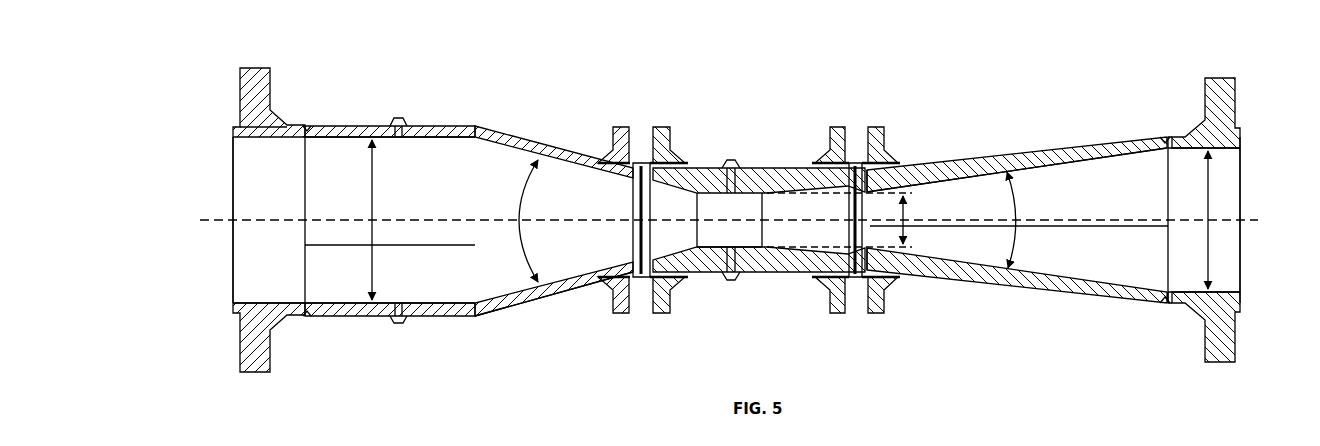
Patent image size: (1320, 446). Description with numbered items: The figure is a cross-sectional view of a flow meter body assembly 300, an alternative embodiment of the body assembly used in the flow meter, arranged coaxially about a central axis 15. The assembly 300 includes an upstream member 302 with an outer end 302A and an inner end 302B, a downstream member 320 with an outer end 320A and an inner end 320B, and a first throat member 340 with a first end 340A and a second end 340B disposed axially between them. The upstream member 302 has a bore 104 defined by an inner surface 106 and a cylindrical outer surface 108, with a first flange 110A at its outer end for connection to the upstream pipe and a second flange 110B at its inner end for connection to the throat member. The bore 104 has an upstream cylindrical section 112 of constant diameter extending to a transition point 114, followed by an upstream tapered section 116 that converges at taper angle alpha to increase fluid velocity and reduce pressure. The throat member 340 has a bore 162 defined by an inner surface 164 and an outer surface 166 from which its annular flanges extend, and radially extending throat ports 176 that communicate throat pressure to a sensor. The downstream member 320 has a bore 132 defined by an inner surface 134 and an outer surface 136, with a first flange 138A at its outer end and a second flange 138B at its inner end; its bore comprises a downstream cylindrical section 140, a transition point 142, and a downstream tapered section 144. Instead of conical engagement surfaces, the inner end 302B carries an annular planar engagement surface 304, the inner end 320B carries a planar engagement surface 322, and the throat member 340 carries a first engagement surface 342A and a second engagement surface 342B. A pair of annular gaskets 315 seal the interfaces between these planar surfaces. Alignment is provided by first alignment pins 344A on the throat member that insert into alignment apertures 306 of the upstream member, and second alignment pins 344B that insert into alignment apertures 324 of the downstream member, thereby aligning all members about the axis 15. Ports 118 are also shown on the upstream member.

The flow meter body assembly 300 is at (245, 55).
The central axis 15 is at (215, 218).
The bore 104 is at (291, 220).
The inner surface 106 is at (255, 140).
The outer surface 108 is at (316, 197).
The first flange 110A is at (281, 218).
The second flange 110B is at (604, 197).
The upstream cylindrical section 112 is at (250, 275).
The transition point 114 is at (490, 312).
The upstream tapered section 116 is at (492, 288).
The ports 118 is at (398, 122).
The bore 132 is at (1173, 247).
The inner surface 134 is at (1085, 160).
The outer surface 136 is at (1130, 135).
The first flange 138A is at (1227, 217).
The second flange 138B is at (890, 204).
The downstream cylindrical section 140 is at (1225, 268).
The transition point 142 is at (1170, 302).
The downstream tapered section 144 is at (1130, 285).
The bore 162 is at (729, 220).
The inner surface 164 is at (712, 247).
The outer surface 166 is at (724, 160).
The throat ports 176 is at (736, 228).
The upstream member 302 is at (450, 128).
The outer end 302A is at (233, 140).
The inner end 302B is at (546, 225).
The engagement surface 304 is at (546, 225).
The alignment apertures 306 is at (612, 155).
The annular gaskets 315 is at (637, 185).
The downstream member 320 is at (1023, 213).
The outer end 320A is at (1245, 140).
The inner end 320B is at (905, 172).
The engagement surface 322 is at (931, 187).
The alignment apertures 324 is at (886, 158).
The first throat member 340 is at (759, 228).
The first end 340A is at (700, 203).
The second end 340B is at (829, 204).
The first engagement surface 342A is at (663, 152).
The second engagement surface 342B is at (840, 155).
The first alignment pins 344A is at (641, 160).
The second alignment pins 344B is at (857, 160).